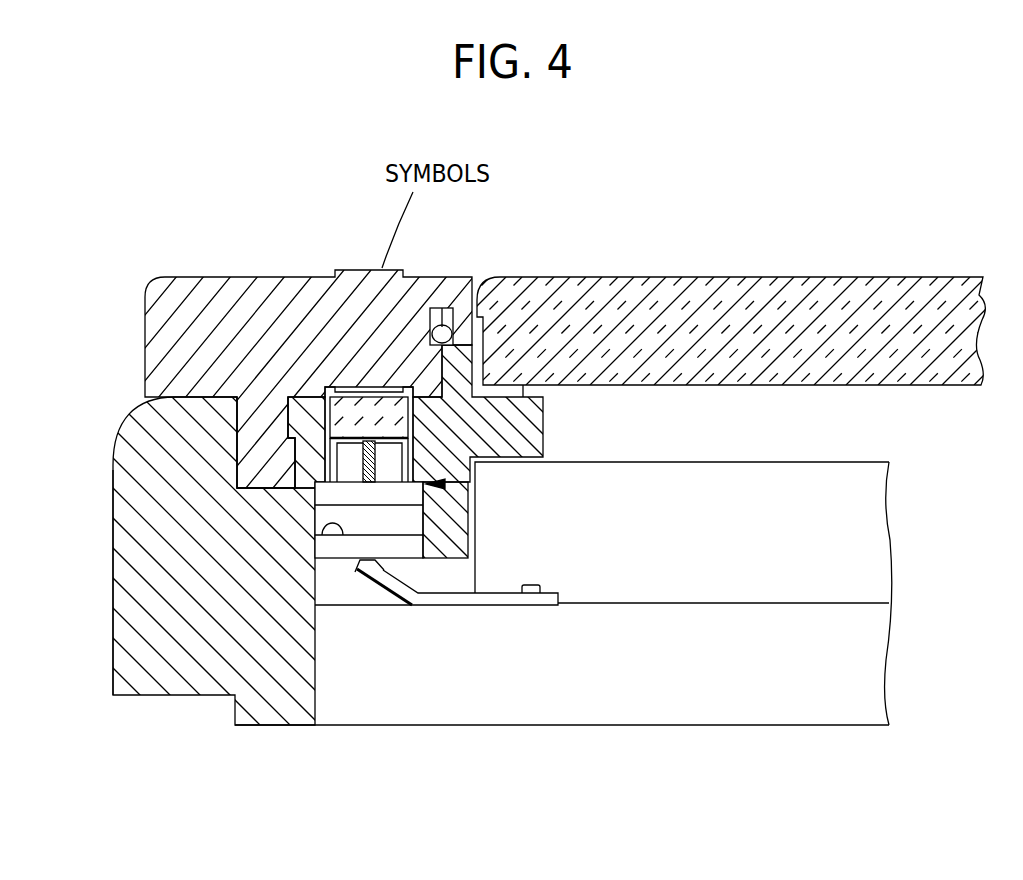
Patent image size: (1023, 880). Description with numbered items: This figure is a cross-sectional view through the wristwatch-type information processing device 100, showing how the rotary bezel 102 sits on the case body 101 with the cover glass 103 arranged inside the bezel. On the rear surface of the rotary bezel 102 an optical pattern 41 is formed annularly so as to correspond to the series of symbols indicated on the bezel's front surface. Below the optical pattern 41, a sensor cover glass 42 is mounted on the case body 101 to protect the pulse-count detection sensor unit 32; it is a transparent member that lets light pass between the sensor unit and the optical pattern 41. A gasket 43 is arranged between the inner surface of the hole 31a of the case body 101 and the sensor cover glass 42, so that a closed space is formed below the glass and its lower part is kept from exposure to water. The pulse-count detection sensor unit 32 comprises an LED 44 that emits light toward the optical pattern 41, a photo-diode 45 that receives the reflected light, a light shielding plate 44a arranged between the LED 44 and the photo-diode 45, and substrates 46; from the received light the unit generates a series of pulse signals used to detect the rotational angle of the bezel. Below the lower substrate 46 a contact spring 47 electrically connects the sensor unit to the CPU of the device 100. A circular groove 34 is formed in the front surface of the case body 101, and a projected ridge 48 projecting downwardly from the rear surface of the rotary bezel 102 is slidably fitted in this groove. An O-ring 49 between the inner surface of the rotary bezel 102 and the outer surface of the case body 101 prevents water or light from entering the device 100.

The wristwatch-type information processing device 100 is at (570, 757).
The case body 101 is at (113, 587).
The rotary bezel 102 is at (178, 292).
The cover glass 103 is at (862, 292).
The hole 31a is at (343, 535).
The pulse-count detection sensor unit 32 is at (445, 485).
The circular groove 34 is at (238, 462).
The optical pattern 41 is at (515, 460).
The sensor cover glass 42 is at (343, 408).
The gasket 43 is at (330, 408).
The LED 44 is at (350, 473).
The light shielding plate 44a is at (388, 578).
The photo-diode 45 is at (380, 473).
The substrates 46 is at (415, 548).
The contact spring 47 is at (470, 597).
The projected ridge 48 is at (265, 442).
The O-ring 49 is at (455, 325).